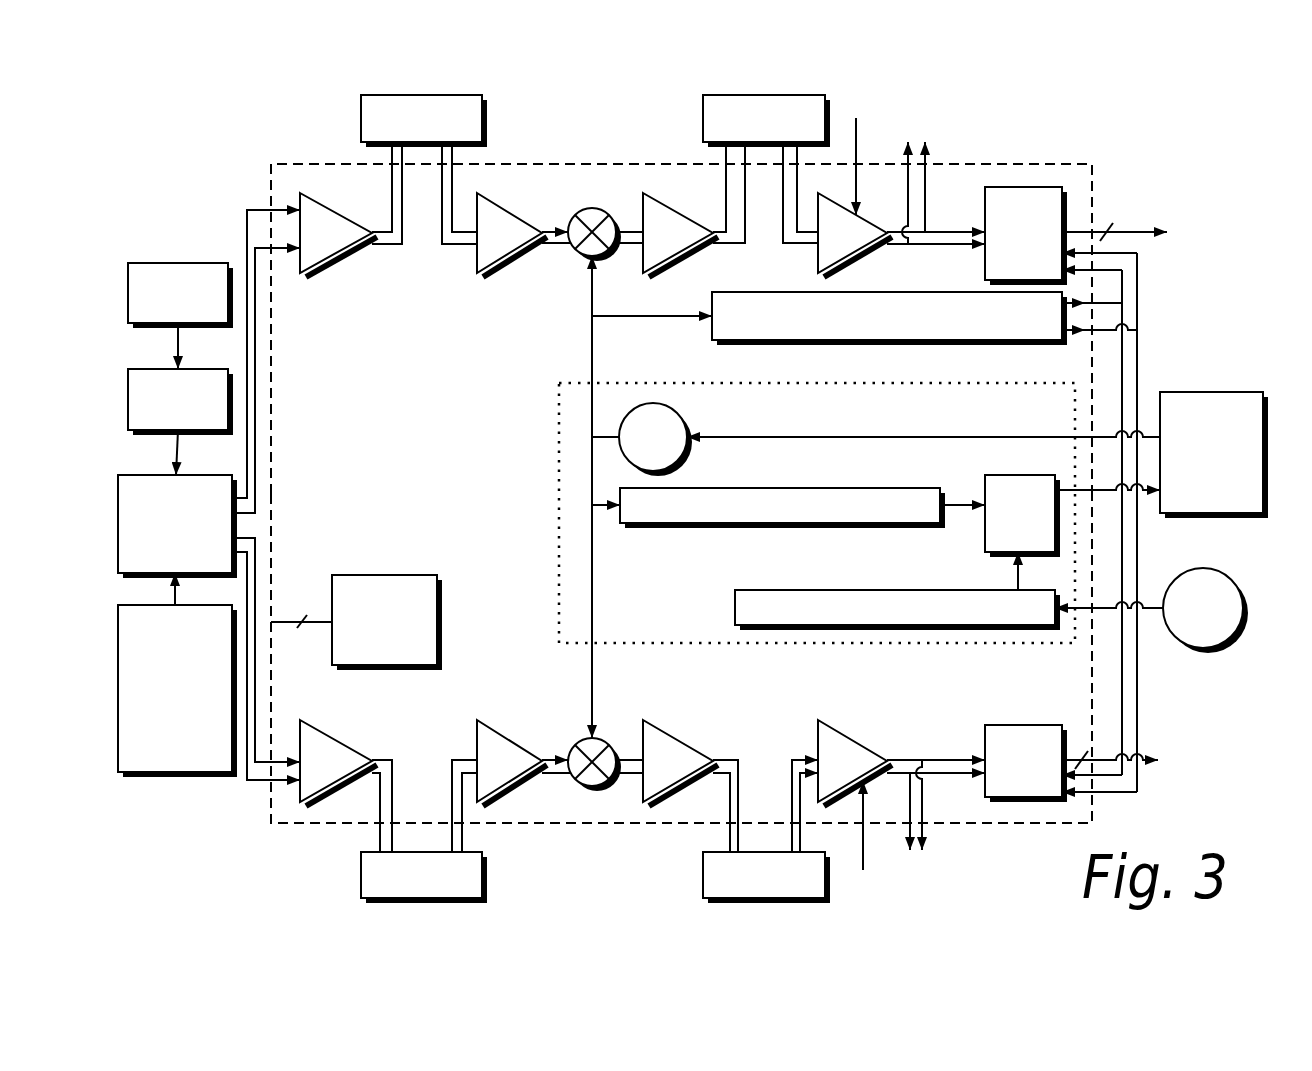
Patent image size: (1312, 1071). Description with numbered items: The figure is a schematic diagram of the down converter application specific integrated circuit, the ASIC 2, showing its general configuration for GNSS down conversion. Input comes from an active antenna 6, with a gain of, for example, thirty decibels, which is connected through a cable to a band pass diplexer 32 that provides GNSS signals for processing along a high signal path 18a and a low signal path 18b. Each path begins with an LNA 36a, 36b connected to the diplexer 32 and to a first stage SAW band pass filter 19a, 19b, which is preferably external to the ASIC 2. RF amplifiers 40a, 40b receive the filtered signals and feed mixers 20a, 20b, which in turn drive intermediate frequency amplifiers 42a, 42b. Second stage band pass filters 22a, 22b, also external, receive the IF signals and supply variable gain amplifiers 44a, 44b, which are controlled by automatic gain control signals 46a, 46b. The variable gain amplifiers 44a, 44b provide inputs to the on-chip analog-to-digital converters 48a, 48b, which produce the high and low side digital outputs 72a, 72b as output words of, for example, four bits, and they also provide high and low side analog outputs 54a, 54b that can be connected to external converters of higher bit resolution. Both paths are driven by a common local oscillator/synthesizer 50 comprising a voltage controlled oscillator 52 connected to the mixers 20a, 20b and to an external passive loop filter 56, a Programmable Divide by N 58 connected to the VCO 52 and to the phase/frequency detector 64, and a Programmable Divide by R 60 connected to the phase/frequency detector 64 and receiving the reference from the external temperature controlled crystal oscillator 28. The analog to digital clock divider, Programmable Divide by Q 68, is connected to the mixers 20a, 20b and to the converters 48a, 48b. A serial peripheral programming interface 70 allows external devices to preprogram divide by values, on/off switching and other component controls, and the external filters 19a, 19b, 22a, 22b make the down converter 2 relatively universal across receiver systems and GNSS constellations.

The ASIC 2 is at (1169, 142).
The active antenna 6 is at (180, 295).
The high signal path 18a is at (258, 187).
The low signal path 18b is at (258, 810).
The first stage SAW band pass filter 19a is at (487, 106).
The first stage SAW band pass filter 19b is at (487, 869).
The mixer 20a is at (622, 200).
The mixer 20b is at (606, 741).
The second stage band pass filter 22a is at (703, 101).
The second stage band pass filter 22b is at (703, 862).
The temperature controlled crystal oscillator 28 is at (1229, 579).
The band pass diplexer 32 is at (198, 476).
The LNA 36a is at (360, 226).
The LNA 36b is at (360, 755).
The RF amplifier 40a is at (536, 229).
The RF amplifier 40b is at (537, 757).
The intermediate frequency amplifier 42a is at (698, 225).
The intermediate frequency amplifier 42b is at (697, 753).
The variable gain amplifier 44a is at (857, 263).
The variable gain amplifier 44b is at (876, 754).
The automatic gain control signal 46a is at (878, 198).
The automatic gain control signal 46b is at (863, 811).
The analog-to-digital converter 48a is at (985, 270).
The analog-to-digital converter 48b is at (985, 746).
The local oscillator/synthesizer 50 is at (558, 386).
The voltage controlled oscillator 52 is at (680, 414).
The analog output 54a is at (908, 213).
The analog output 54b is at (910, 817).
The passive loop filter 56 is at (1228, 393).
The Programmable Divide by N 58 is at (900, 489).
The Programmable Divide by R 60 is at (750, 591).
The phase/frequency detector 64 is at (1020, 476).
The Programmable Divide by Q 68 is at (745, 293).
The serial peripheral programming interface 70 is at (417, 576).
The digital output 72a is at (1143, 230).
The digital output 72b is at (1072, 758).